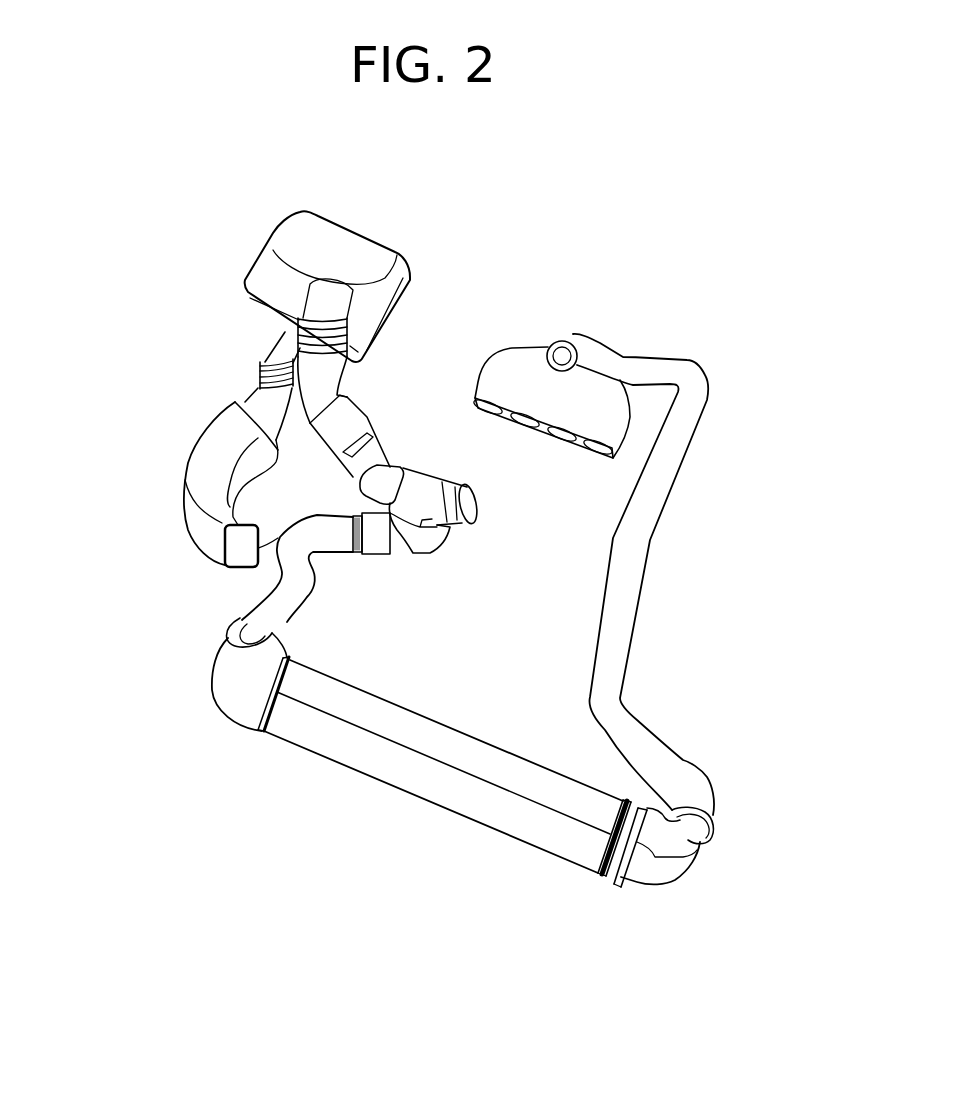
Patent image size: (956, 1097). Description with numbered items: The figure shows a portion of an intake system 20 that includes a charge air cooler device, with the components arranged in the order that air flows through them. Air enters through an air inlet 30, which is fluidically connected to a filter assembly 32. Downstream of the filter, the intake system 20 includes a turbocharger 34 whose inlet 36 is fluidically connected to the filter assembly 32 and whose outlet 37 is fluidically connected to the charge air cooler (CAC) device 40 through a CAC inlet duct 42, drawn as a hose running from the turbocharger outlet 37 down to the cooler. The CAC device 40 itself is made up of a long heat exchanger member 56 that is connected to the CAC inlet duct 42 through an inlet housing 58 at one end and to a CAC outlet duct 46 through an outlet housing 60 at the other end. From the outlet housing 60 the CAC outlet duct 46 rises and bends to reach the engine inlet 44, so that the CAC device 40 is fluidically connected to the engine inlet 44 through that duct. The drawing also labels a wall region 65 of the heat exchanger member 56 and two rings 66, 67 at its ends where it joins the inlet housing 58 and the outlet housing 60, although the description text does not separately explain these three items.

The intake system 20 is at (715, 572).
The air inlet 30 is at (162, 461).
The filter assembly 32 is at (232, 318).
The turbocharger 34 is at (457, 547).
The inlet 36 is at (353, 478).
The outlet 37 is at (390, 551).
The charge air cooler (CAC) device 40 is at (247, 762).
The CAC inlet duct 42 is at (317, 592).
The engine inlet 44 is at (522, 327).
The CAC outlet duct 46 is at (633, 625).
The heat exchanger member 56 is at (443, 771).
The inlet housing 58 is at (217, 680).
The outlet housing 60 is at (687, 873).
The cylinder wall 65 is at (440, 735).
The ring 66 is at (295, 663).
The ring 67 is at (610, 793).